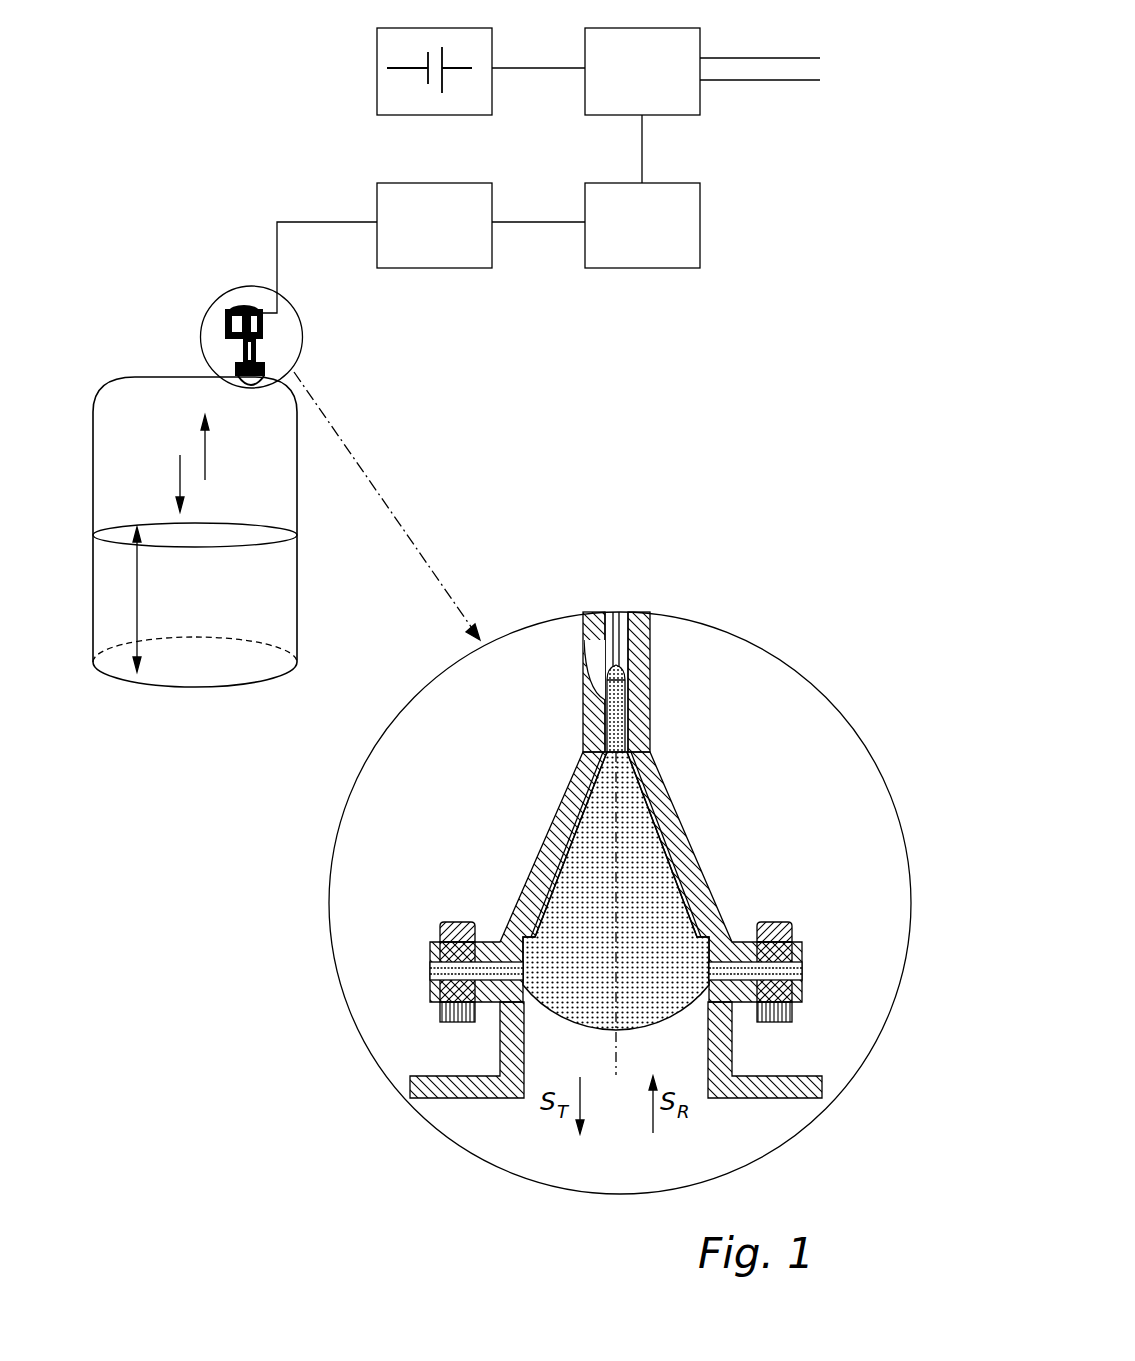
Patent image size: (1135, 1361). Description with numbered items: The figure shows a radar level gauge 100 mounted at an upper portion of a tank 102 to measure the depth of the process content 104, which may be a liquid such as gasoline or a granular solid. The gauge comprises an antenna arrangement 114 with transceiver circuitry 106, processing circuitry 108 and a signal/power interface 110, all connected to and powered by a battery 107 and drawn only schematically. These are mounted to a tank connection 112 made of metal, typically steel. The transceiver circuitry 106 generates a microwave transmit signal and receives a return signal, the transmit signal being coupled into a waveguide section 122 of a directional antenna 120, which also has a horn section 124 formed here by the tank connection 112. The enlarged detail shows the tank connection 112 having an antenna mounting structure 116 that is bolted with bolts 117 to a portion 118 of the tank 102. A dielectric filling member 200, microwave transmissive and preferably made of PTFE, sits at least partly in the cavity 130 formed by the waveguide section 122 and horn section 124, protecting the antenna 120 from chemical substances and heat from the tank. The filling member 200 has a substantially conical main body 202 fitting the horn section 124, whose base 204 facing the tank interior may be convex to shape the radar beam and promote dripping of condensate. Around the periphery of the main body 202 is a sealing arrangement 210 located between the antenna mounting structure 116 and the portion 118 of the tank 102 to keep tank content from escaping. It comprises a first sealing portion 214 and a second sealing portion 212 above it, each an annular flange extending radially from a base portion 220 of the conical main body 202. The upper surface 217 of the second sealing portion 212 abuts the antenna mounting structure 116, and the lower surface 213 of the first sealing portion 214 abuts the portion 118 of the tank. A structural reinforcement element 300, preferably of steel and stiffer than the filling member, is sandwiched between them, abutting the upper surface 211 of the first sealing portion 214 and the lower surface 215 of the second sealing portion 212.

The radar level gauge 100 is at (192, 492).
The tank 102 is at (458, 1075).
The process content 104 is at (195, 532).
The transceiver circuitry 106 is at (430, 270).
The battery 107 is at (377, 56).
The processing circuitry 108 is at (642, 270).
The signal/power interface 110 is at (700, 43).
The tank connection 112 is at (236, 342).
The antenna arrangement 114 is at (243, 285).
The antenna mounting structure 116 is at (743, 940).
The bolts 117 is at (440, 925).
The portion of the tank 118 is at (803, 993).
The directional antenna 120 is at (663, 808).
The waveguide section 122 is at (584, 640).
The horn section 124 is at (553, 887).
The cavity 130 is at (677, 882).
The dielectric filling member 200 is at (640, 862).
The main body 202 is at (587, 850).
The base 204 is at (663, 1020).
The sealing arrangement 210 is at (790, 1015).
The upper surface of the first sealing portion 211 is at (520, 982).
The second sealing portion 212 is at (430, 945).
The lower surface of the first sealing portion 213 is at (500, 990).
The first sealing portion 214 is at (445, 985).
The lower surface of the second sealing portion 215 is at (803, 955).
The upper surface of the second sealing portion 217 is at (787, 920).
The base portion 220 is at (733, 1007).
The structural reinforcement element 300 is at (432, 970).